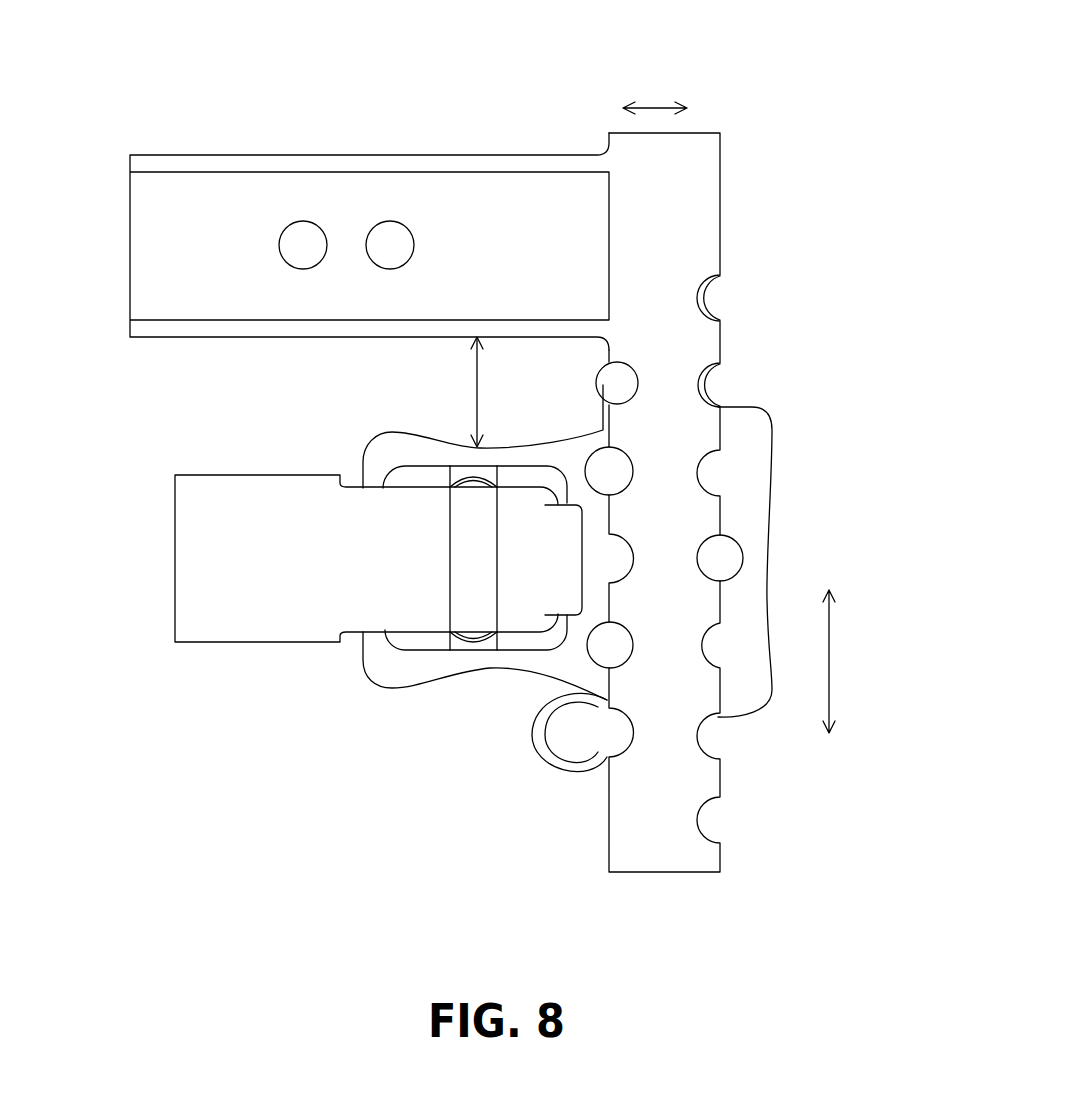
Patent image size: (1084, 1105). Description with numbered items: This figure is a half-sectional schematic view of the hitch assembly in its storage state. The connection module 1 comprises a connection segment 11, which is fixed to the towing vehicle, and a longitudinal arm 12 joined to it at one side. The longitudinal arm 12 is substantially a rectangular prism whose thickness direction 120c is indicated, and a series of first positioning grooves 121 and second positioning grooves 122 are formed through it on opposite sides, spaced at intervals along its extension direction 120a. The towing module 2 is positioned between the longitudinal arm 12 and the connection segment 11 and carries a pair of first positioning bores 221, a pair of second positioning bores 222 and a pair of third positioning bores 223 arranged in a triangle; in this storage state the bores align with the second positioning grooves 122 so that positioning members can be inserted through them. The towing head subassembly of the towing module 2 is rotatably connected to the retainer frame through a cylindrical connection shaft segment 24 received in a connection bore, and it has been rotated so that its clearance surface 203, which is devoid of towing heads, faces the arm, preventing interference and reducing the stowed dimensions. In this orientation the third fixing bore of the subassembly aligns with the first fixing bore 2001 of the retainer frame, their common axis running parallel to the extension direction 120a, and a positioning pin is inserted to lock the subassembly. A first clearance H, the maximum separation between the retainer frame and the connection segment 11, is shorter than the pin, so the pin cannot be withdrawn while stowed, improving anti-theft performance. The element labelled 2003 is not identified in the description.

The connection module 1 is at (509, 452).
The connection segment 11 is at (348, 157).
The longitudinal arm 12 is at (657, 787).
The first positioning grooves 121 is at (717, 303).
The second positioning grooves 122 is at (625, 385).
The extension direction 120a is at (855, 661).
The thickness direction 120c is at (655, 95).
The towing module 2 is at (602, 584).
The first positioning bores 221 is at (597, 650).
The second positioning bores 222 is at (720, 537).
The third positioning bores 223 is at (603, 447).
The connection shaft segment 24 is at (415, 608).
The first fixing bore 2001 is at (465, 477).
The retaining ring 2003 is at (463, 540).
The clearance surface 203 is at (334, 511).
The first clearance H is at (470, 392).